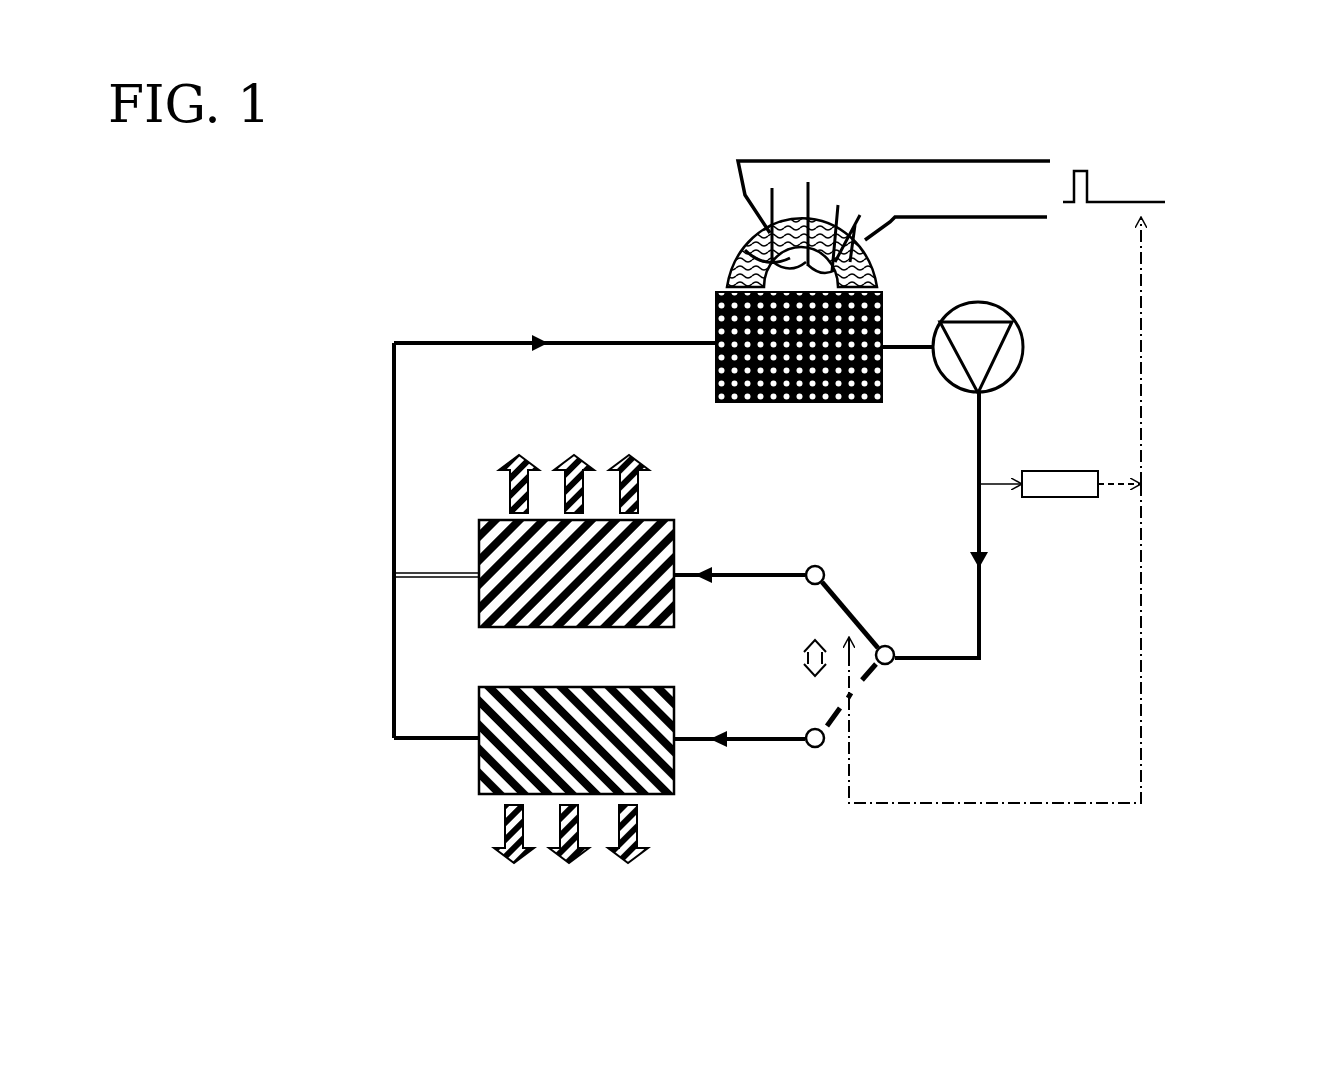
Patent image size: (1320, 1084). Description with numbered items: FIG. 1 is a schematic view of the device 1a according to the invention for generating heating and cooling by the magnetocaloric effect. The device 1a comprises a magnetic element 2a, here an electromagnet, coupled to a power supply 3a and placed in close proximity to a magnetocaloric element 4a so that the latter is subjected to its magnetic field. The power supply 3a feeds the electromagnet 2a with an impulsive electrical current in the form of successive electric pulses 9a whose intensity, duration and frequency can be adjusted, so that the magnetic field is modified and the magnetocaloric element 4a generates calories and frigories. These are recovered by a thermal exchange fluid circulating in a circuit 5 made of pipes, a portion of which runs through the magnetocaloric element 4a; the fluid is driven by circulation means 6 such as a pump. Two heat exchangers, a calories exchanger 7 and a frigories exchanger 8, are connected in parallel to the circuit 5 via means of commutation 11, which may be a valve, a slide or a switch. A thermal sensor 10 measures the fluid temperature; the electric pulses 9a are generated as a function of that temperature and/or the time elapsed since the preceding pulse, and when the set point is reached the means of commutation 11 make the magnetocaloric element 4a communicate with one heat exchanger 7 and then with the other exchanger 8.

The device 1a is at (347, 594).
The magnetic element 2a is at (740, 242).
The power supply 3a is at (943, 155).
The magnetocaloric element 4a is at (715, 320).
The circuit for thermal exchange fluid 5 is at (390, 415).
The circulation means 6 is at (1000, 360).
The calories exchanger 7 is at (620, 596).
The frigories exchanger 8 is at (505, 755).
The electric pulses 9a is at (1108, 167).
The thermal sensor 10 is at (1080, 503).
The means of commutation 11 is at (871, 689).